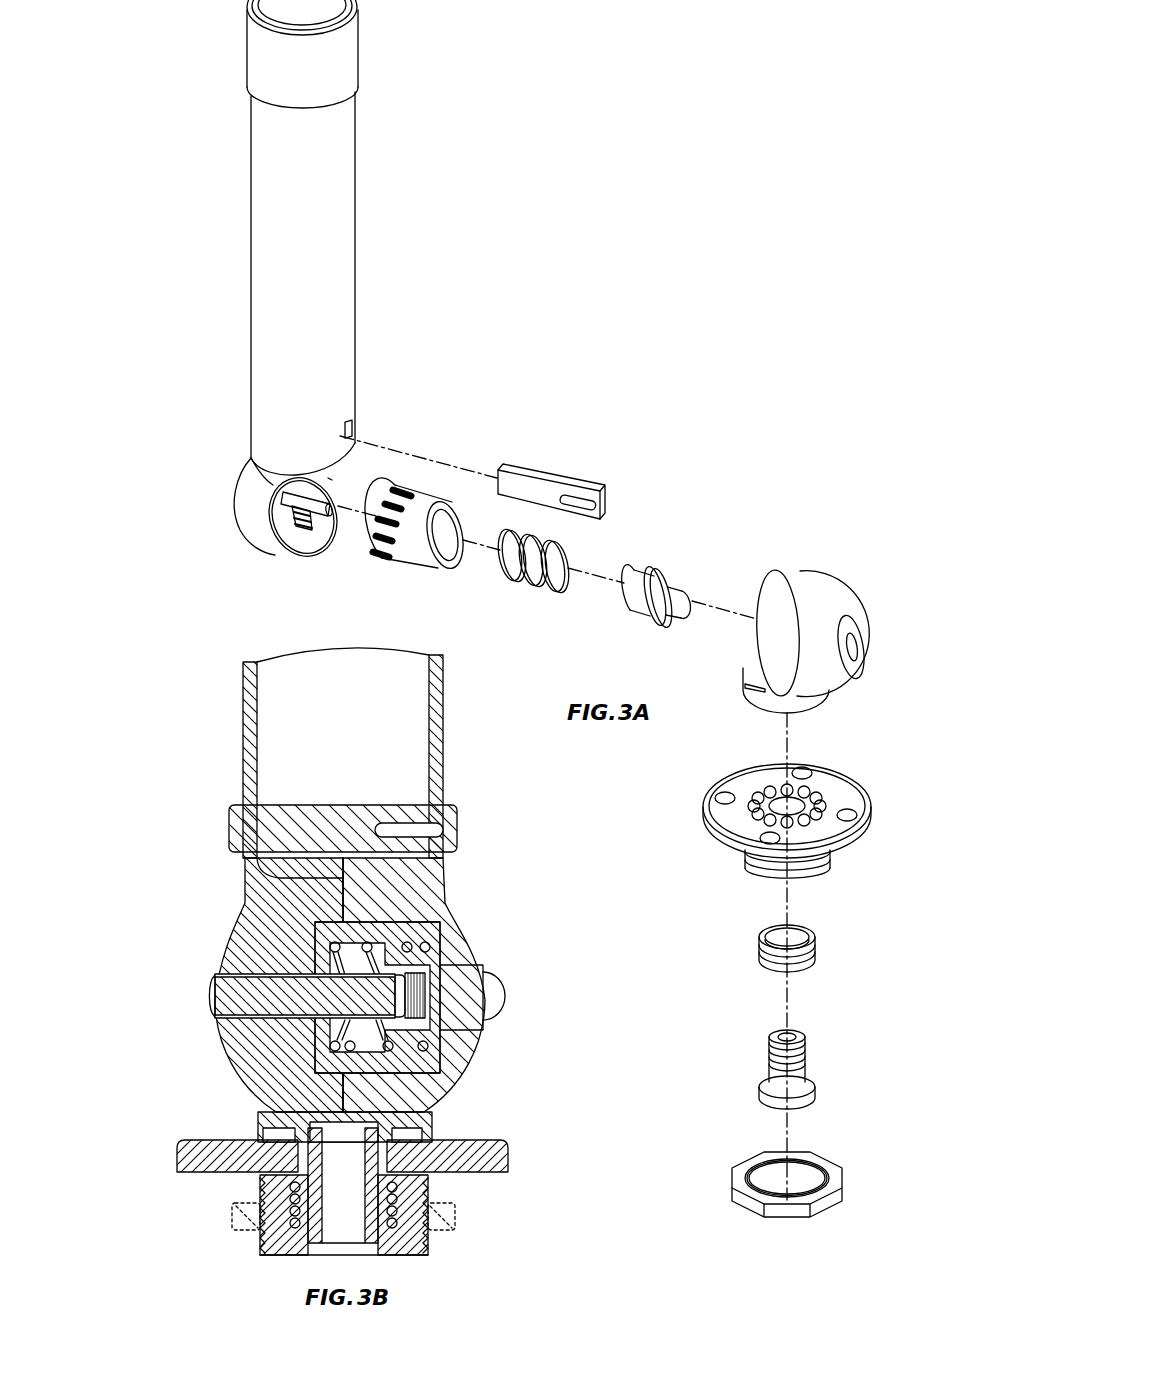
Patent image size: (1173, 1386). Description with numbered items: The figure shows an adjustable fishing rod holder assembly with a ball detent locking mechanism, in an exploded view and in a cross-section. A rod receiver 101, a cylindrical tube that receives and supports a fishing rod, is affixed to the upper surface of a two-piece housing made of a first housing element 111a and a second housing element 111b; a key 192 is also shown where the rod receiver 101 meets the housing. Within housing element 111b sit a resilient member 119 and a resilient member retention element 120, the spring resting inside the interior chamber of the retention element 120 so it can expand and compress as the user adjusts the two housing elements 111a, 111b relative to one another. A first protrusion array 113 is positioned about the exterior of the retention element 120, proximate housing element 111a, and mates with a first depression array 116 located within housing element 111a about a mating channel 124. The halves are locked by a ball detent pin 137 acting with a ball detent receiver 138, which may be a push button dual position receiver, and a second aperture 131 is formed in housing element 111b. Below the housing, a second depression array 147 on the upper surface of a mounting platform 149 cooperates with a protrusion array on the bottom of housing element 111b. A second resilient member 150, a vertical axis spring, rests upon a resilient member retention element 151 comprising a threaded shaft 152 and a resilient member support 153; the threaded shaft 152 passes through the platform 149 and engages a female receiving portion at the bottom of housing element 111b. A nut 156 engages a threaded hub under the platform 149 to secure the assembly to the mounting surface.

In FIG. 3A, the rod receiver 101 is at (355, 212).
In FIG. 3B, the rod receiver 101 is at (445, 712).
In FIG. 3A, the first housing element 111a is at (235, 488).
In FIG. 3B, the first housing element 111a is at (236, 947).
In FIG. 3A, the second housing element 111b is at (822, 616).
In FIG. 3B, the second housing element 111b is at (482, 920).
In FIG. 3A, the first protrusion array 113 is at (397, 487).
In FIG. 3A, the first depression array 116 is at (302, 532).
In FIG. 3A, the resilient member 119 is at (569, 552).
In FIG. 3A, the resilient member retention element 120 is at (417, 515).
In FIG. 3B, the resilient member retention element 120 is at (430, 928).
In FIG. 3A, the mating channel 124 is at (310, 512).
In FIG. 3A, the second aperture 131 is at (852, 650).
In FIG. 3A, the ball detent pin 137 is at (330, 480).
In FIG. 3B, the ball detent pin 137 is at (310, 997).
In FIG. 3A, the ball detent receiver 138 is at (667, 570).
In FIG. 3B, the ball detent receiver 138 is at (500, 990).
In FIG. 3A, the second depression array 147 is at (800, 795).
In FIG. 3A, the mounting platform 149 is at (807, 811).
In FIG. 3B, the mounting platform 149 is at (500, 1145).
In FIG. 3A, the second resilient member 150 is at (815, 935).
In FIG. 3B, the second resilient member 150 is at (397, 1202).
In FIG. 3A, the resilient member retention element 151 is at (784, 1059).
In FIG. 3B, the resilient member retention element 151 is at (348, 1203).
In FIG. 3A, the threaded shaft 152 is at (768, 1055).
In FIG. 3A, the resilient member support 153 is at (770, 1086).
In FIG. 3B, the resilient member support 153 is at (382, 1245).
In FIG. 3A, the nut 156 is at (842, 1195).
In FIG. 3B, the nut 156 is at (455, 1218).
In FIG. 3A, the key 192 is at (548, 470).
In FIG. 3B, the key 192 is at (457, 818).